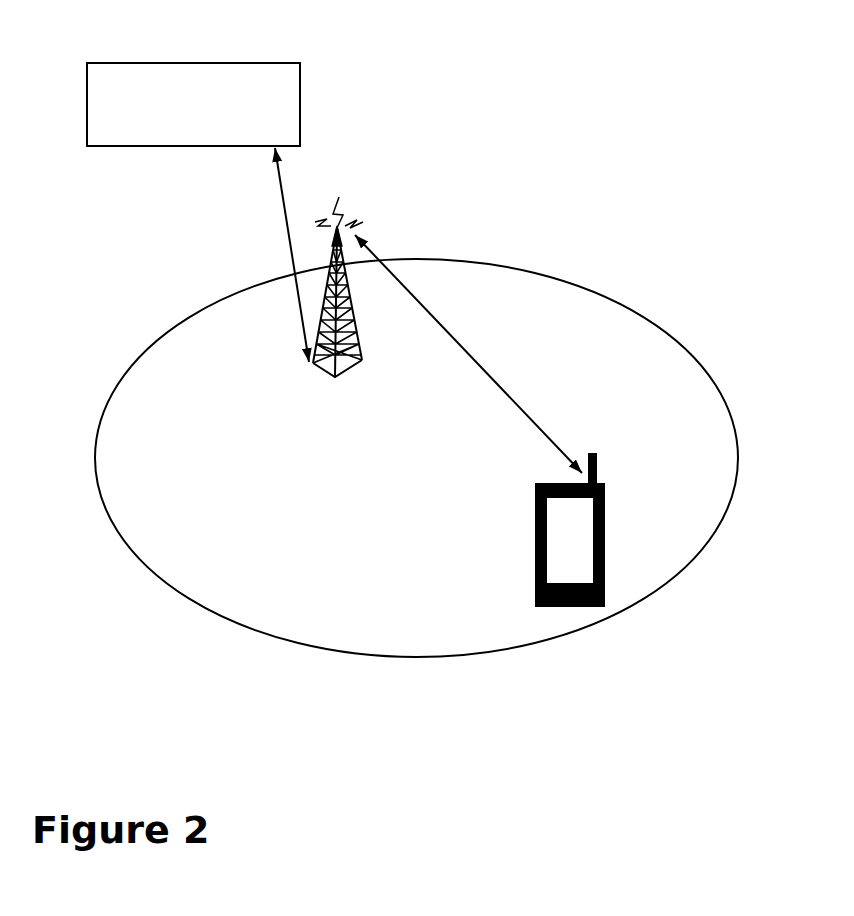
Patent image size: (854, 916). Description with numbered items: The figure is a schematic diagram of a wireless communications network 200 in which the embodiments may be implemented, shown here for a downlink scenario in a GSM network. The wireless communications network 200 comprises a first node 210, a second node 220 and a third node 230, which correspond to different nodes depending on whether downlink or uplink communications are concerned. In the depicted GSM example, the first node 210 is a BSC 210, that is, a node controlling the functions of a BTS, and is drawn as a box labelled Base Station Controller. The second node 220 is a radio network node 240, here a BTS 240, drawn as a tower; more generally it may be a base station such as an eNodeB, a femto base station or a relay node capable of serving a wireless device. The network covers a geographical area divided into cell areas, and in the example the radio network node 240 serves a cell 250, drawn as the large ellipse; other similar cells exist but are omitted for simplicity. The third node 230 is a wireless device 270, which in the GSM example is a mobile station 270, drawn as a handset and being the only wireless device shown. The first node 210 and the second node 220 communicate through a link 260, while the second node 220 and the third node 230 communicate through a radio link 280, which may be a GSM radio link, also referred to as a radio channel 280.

The wireless communications network 200 is at (709, 708).
The first node 210 is at (190, 63).
The second node 220 is at (260, 312).
The third node 230 is at (477, 552).
The radio network node 240 is at (335, 378).
The cell 250 is at (257, 632).
The link 260 is at (287, 228).
The wireless device 270 is at (535, 595).
The radio link 280 is at (519, 411).